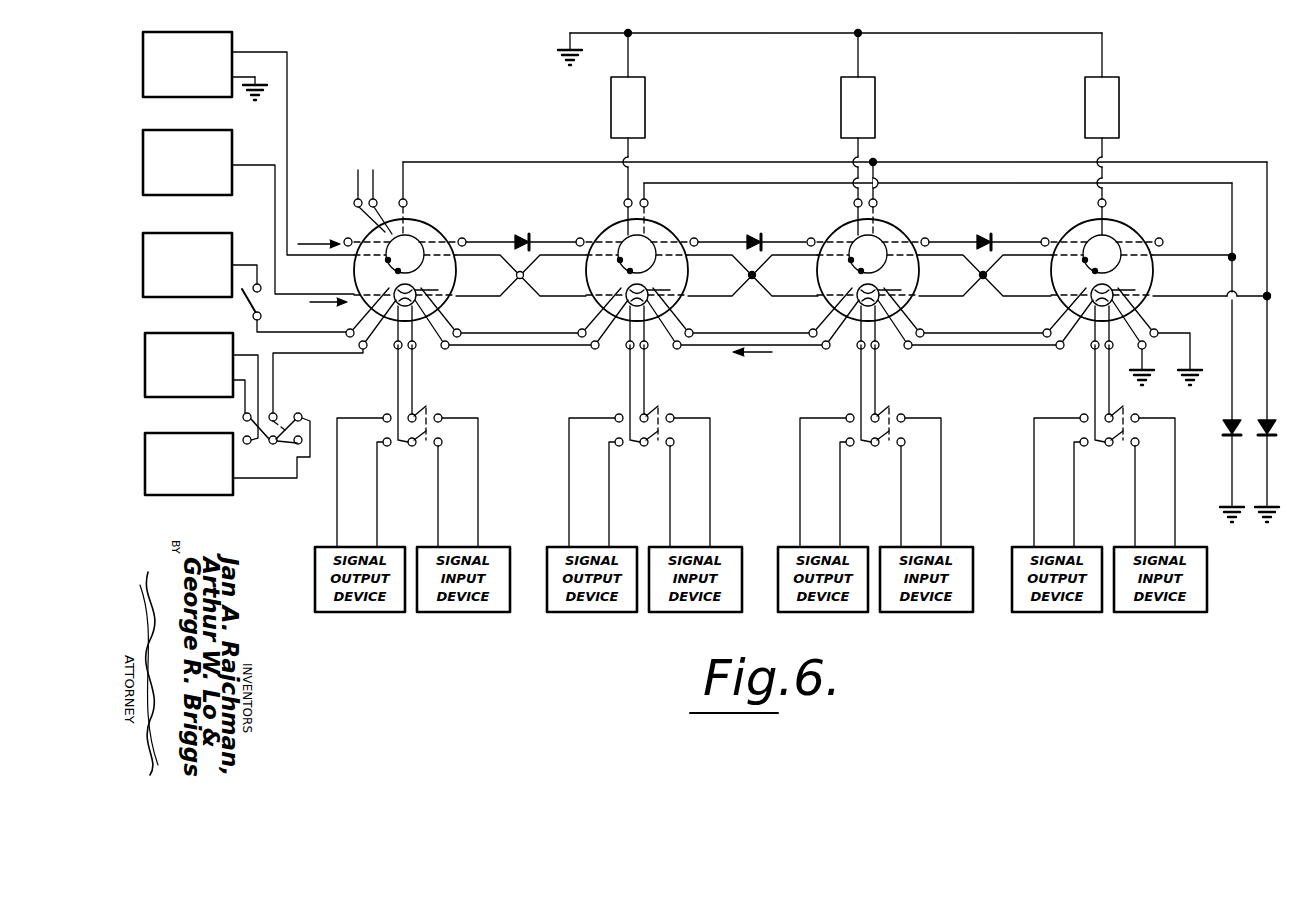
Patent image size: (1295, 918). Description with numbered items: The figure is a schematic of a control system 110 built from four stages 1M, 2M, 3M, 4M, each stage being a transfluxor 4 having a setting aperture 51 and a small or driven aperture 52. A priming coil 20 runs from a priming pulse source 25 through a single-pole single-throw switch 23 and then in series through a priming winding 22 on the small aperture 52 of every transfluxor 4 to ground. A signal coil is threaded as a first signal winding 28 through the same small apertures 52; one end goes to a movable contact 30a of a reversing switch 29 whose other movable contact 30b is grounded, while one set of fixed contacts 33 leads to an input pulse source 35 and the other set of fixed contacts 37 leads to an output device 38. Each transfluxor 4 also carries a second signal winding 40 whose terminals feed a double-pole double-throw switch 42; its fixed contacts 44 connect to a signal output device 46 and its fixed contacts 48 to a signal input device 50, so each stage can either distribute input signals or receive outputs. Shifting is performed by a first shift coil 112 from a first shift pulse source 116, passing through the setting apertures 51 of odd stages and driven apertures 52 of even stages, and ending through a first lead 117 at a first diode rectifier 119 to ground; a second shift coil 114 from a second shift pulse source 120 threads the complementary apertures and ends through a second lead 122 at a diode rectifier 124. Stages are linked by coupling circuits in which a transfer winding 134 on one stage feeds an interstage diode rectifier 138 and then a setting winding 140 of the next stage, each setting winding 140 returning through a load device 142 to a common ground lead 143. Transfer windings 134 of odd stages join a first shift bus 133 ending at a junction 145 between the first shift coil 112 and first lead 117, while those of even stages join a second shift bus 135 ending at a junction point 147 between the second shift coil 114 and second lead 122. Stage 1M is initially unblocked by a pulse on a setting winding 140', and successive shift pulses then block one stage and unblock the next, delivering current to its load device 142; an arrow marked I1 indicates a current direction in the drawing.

The first shift pulse source 116 is at (232, 40).
The second shift pulse source 120 is at (182, 130).
The priming pulse source 25 is at (230, 235).
The input pulse source 35 is at (168, 333).
The output device 38 is at (233, 494).
The first shift coil 112 is at (1200, 298).
The second shift coil 114 is at (1172, 258).
The single-pole single-throw switch 23 is at (243, 305).
The priming coil 20 is at (292, 326).
The priming winding 22 is at (352, 318).
The first signal winding 28 is at (1062, 345).
The fixed contacts 33 is at (243, 417).
The movable contact 30a is at (256, 430).
The reversing switch 29 is at (278, 415).
The fixed contacts 37 is at (302, 417).
The movable contact 30b is at (271, 448).
The control system 110 is at (828, 30).
The common ground lead 143 is at (582, 32).
The load devices 142 is at (611, 106).
The first shift bus 133 is at (554, 160).
The second shift bus 135 is at (734, 182).
The first lead 117 is at (1265, 386).
The second lead 122 is at (1230, 400).
The junction point 147 is at (1230, 256).
The junction 145 is at (1265, 294).
The diode rectifier 124 is at (1228, 440).
The first diode rectifier 119 is at (1262, 440).
The stage 1M is at (405, 284).
The stage 2M is at (637, 284).
The stage 3M is at (868, 284).
The stage 4M is at (1102, 284).
The setting aperture 51 is at (388, 260).
The small aperture 52 is at (398, 272).
The setting winding 140' is at (355, 202).
The transfer winding 134 is at (407, 206).
The setting winding 140 is at (840, 186).
The transfluxor 4 is at (436, 228).
The interstage diode rectifier 138 is at (519, 236).
The double-pole double-throw switch 42 is at (420, 410).
The fixed contacts 44 is at (387, 442).
The fixed contacts 48 is at (445, 432).
The signal output devices 46 is at (324, 546).
The signal input devices 50 is at (430, 546).
The second signal winding 40 is at (418, 350).
The current direction I1 is at (752, 364).